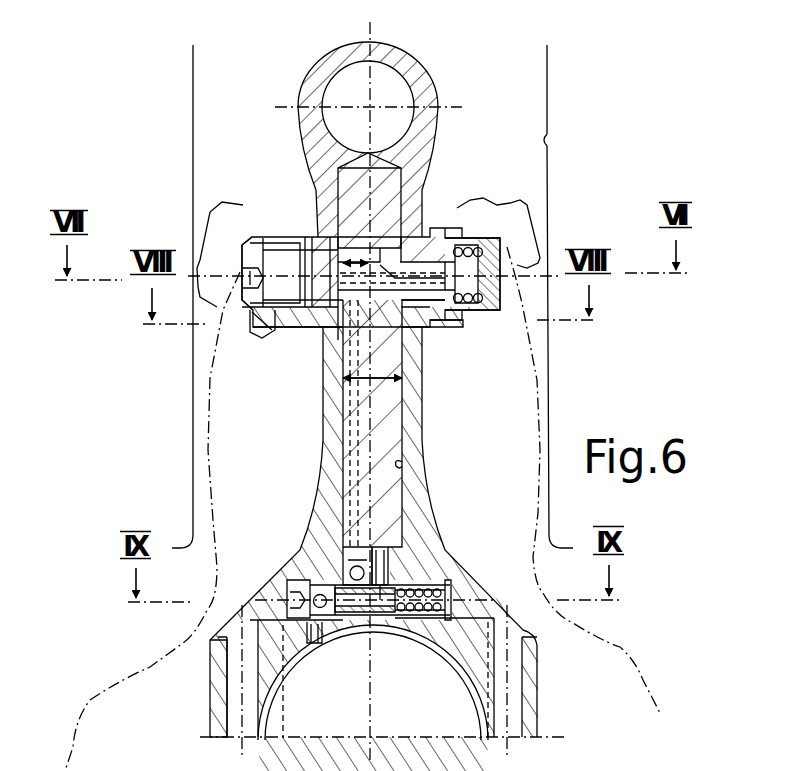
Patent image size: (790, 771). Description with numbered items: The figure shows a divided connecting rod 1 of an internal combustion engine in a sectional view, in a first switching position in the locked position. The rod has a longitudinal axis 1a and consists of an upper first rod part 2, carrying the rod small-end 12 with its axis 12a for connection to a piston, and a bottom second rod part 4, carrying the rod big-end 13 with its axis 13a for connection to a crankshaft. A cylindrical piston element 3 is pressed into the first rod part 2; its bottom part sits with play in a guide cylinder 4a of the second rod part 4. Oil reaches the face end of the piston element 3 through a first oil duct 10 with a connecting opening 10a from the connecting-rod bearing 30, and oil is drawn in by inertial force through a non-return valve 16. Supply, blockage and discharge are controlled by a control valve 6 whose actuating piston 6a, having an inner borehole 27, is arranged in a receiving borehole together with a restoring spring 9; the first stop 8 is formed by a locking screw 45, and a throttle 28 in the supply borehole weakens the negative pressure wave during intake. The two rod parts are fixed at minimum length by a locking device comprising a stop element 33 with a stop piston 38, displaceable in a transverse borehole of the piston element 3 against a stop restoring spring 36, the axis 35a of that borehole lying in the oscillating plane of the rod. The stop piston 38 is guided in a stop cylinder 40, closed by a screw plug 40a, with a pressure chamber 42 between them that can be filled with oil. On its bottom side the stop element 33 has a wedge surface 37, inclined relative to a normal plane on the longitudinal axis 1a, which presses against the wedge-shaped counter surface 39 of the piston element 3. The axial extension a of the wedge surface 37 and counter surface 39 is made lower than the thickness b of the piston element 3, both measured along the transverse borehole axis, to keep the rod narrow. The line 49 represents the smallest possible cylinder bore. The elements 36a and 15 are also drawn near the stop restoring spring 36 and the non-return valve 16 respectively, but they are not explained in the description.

The divided connecting rod 1 is at (450, 101).
The longitudinal axis 1a is at (372, 30).
The upper first rod part 2 is at (424, 134).
The rod small-end 12 is at (398, 97).
The axis of the rod small-end 12a is at (366, 103).
The stop element 33 is at (392, 258).
The axis of the transverse borehole 35a is at (651, 275).
The stop restoring spring 36 is at (467, 252).
The nut flange 36a is at (453, 237).
The stop cylinder 40 is at (292, 260).
The screw plug 40a is at (285, 290).
The stop piston 38 is at (318, 263).
The axial extension of the wedge surface and counter surface a is at (357, 260).
The pressure chamber 42 is at (255, 333).
The wedge surface 37 is at (390, 302).
The counter surface 39 is at (410, 336).
The thickness of the piston element b is at (402, 378).
The cylindrical piston element 3 is at (392, 428).
The guide cylinder 4a is at (400, 468).
The bottom second rod part 4 is at (427, 557).
The non-return valve 16 is at (343, 548).
The ball 15 is at (343, 568).
The first oil duct 10 is at (388, 552).
The connecting opening 10a is at (382, 590).
The first stop 8 is at (335, 590).
The locking screw 45 is at (287, 584).
The restoring spring 9 is at (452, 590).
The control valve 6 is at (361, 627).
The actuating piston 6a is at (383, 613).
The inner borehole 27 is at (358, 617).
The throttle 28 is at (318, 645).
The connecting-rod bearing 30 is at (457, 678).
The rod big-end 13 is at (450, 720).
The axis of the rod big-end 13a is at (370, 737).
The line representing the smallest possible cylinder bore 49 is at (552, 138).